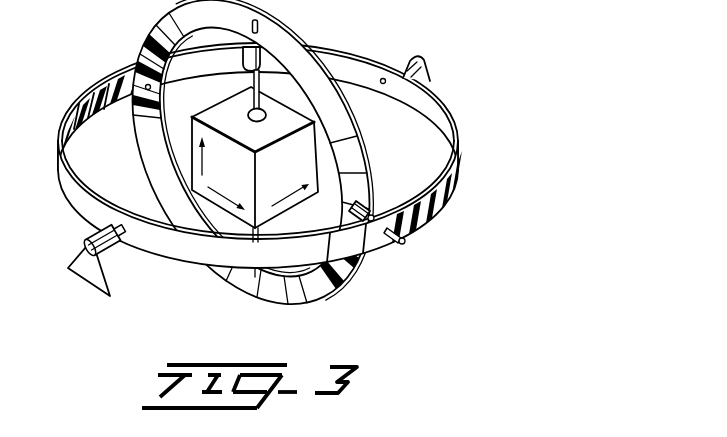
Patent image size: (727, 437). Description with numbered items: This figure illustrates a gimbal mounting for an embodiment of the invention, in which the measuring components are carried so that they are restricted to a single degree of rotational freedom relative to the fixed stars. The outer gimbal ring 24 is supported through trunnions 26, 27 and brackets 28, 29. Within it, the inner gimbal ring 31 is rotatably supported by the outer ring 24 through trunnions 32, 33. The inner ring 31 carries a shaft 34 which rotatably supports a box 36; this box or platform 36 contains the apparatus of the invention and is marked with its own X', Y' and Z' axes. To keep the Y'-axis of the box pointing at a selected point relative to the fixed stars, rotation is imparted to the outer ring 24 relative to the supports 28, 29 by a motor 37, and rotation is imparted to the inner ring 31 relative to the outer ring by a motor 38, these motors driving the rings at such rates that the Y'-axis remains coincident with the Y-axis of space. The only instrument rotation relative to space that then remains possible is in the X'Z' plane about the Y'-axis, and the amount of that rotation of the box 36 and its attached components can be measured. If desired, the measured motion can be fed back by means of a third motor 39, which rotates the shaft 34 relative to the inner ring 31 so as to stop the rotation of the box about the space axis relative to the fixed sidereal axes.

The outer gimbal ring 24 is at (239, 173).
The trunnion 26 is at (125, 243).
The trunnion 27 is at (424, 82).
The bracket 28 is at (80, 259).
The bracket 29 is at (420, 64).
The inner gimbal ring 31 is at (250, 173).
The trunnion 32 is at (402, 240).
The trunnion 33 is at (128, 76).
The shaft 34 is at (251, 78).
The box 36 is at (291, 204).
The motor 37 is at (92, 249).
The motor 38 is at (373, 211).
The third motor 39 is at (246, 54).